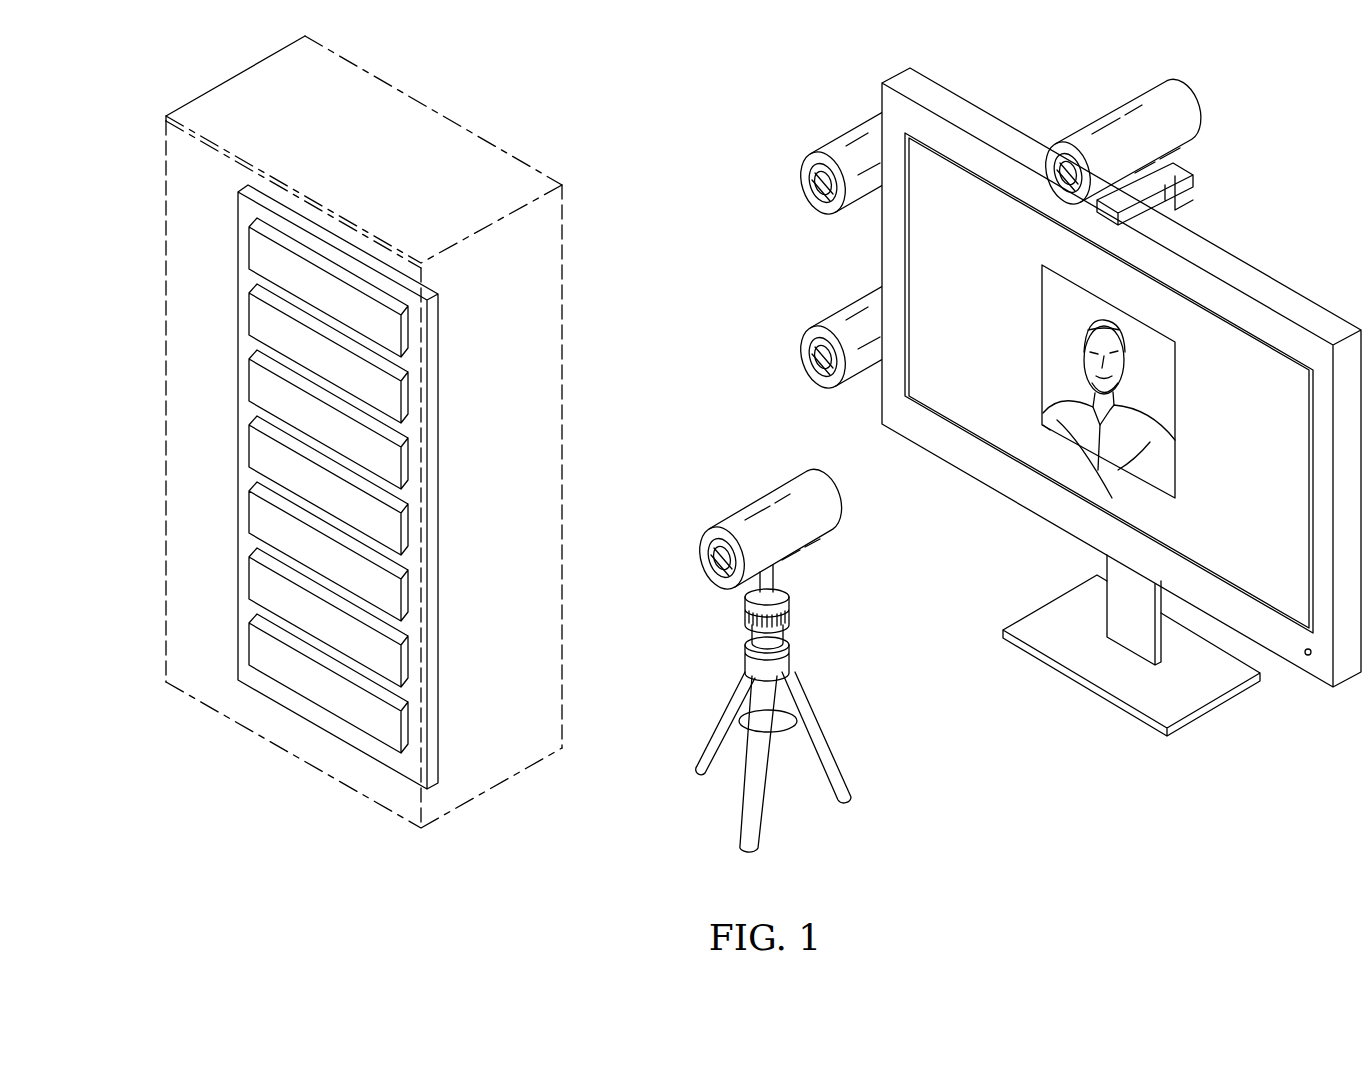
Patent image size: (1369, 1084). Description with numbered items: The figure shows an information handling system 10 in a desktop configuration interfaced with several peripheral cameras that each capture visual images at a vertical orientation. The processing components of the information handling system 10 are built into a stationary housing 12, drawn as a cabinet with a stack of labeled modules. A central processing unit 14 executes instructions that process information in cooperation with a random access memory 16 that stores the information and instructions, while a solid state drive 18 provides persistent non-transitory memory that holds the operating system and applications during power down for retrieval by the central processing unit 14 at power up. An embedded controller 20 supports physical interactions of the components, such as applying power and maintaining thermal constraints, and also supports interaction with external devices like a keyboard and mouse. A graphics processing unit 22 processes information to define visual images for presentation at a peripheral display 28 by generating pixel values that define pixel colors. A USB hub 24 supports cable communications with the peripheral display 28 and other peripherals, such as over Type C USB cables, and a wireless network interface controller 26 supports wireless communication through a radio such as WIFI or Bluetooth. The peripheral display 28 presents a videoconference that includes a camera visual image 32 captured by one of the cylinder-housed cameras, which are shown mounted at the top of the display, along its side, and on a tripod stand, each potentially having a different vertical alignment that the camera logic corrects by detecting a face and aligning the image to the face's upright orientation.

The information handling system 10 is at (364, 488).
The housing 12 is at (253, 741).
The central processing unit 14 is at (255, 252).
The random access memory 16 is at (255, 318).
The solid state drive 18 is at (255, 384).
The embedded controller 20 is at (255, 450).
The graphics processing unit 22 is at (255, 516).
The USB hub 24 is at (255, 648).
The wireless network interface controller 26 is at (255, 582).
The peripheral display 28 is at (1288, 276).
The camera visual image 32 is at (1175, 428).